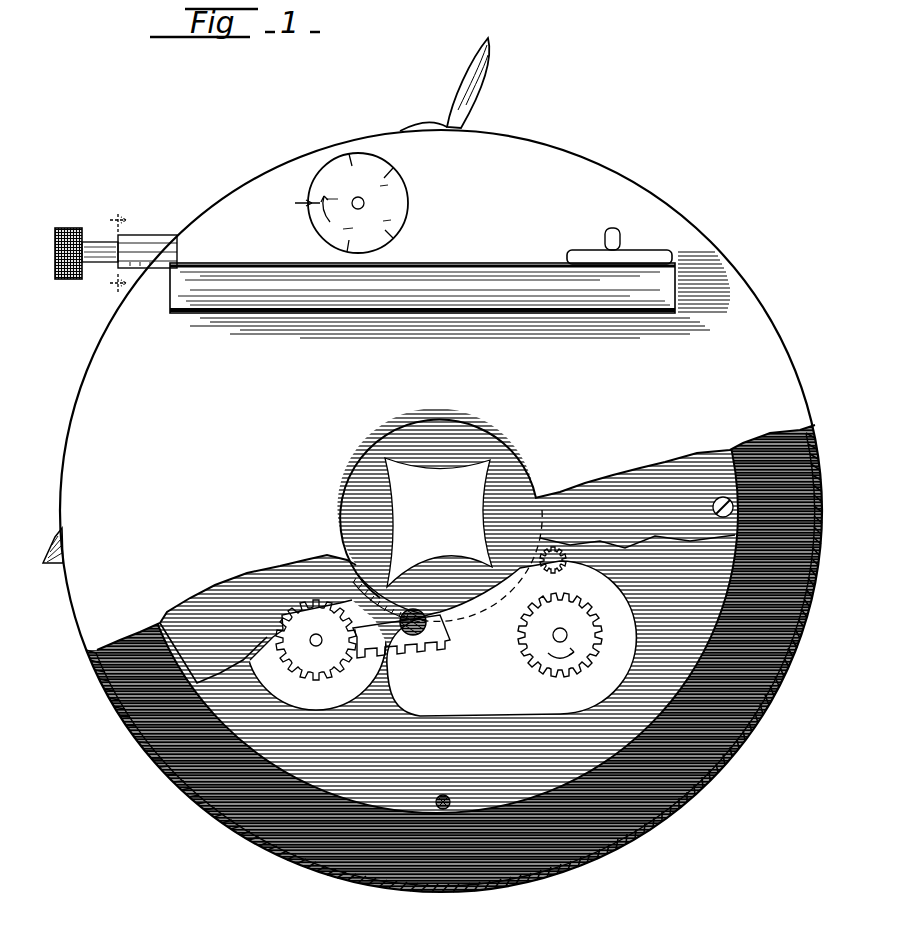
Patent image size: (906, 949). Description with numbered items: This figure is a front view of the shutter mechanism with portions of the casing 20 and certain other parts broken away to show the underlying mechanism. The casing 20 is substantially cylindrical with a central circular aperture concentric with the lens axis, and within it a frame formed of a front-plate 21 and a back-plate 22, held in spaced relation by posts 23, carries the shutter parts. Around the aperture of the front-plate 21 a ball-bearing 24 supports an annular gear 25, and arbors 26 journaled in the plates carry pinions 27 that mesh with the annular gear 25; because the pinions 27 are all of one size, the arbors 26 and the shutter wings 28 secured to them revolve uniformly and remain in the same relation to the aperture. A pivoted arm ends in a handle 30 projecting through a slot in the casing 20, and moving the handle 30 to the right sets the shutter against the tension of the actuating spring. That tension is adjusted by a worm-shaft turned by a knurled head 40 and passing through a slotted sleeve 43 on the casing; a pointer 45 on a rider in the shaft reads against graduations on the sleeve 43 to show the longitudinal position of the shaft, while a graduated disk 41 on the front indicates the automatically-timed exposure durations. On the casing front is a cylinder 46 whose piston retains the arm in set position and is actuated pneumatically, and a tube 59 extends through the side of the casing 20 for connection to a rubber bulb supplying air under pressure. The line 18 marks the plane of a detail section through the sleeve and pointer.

The section line 18 is at (117, 252).
The casing 20 is at (767, 352).
The front-plate 21 is at (658, 473).
The back-plate 22 is at (505, 716).
The posts 23 is at (436, 802).
The ball-bearing 24 is at (428, 620).
The annular gear 25 is at (446, 636).
The arbors 26 is at (563, 630).
The pinions 27 is at (525, 648).
The shutter wings 28 is at (485, 479).
The handle 30 is at (478, 80).
The knurled head 40 is at (69, 280).
The disk 41 is at (398, 195).
The sleeve 43 is at (160, 236).
The pointer 45 is at (113, 248).
The cylinder 46 is at (170, 312).
The tube 59 is at (53, 568).